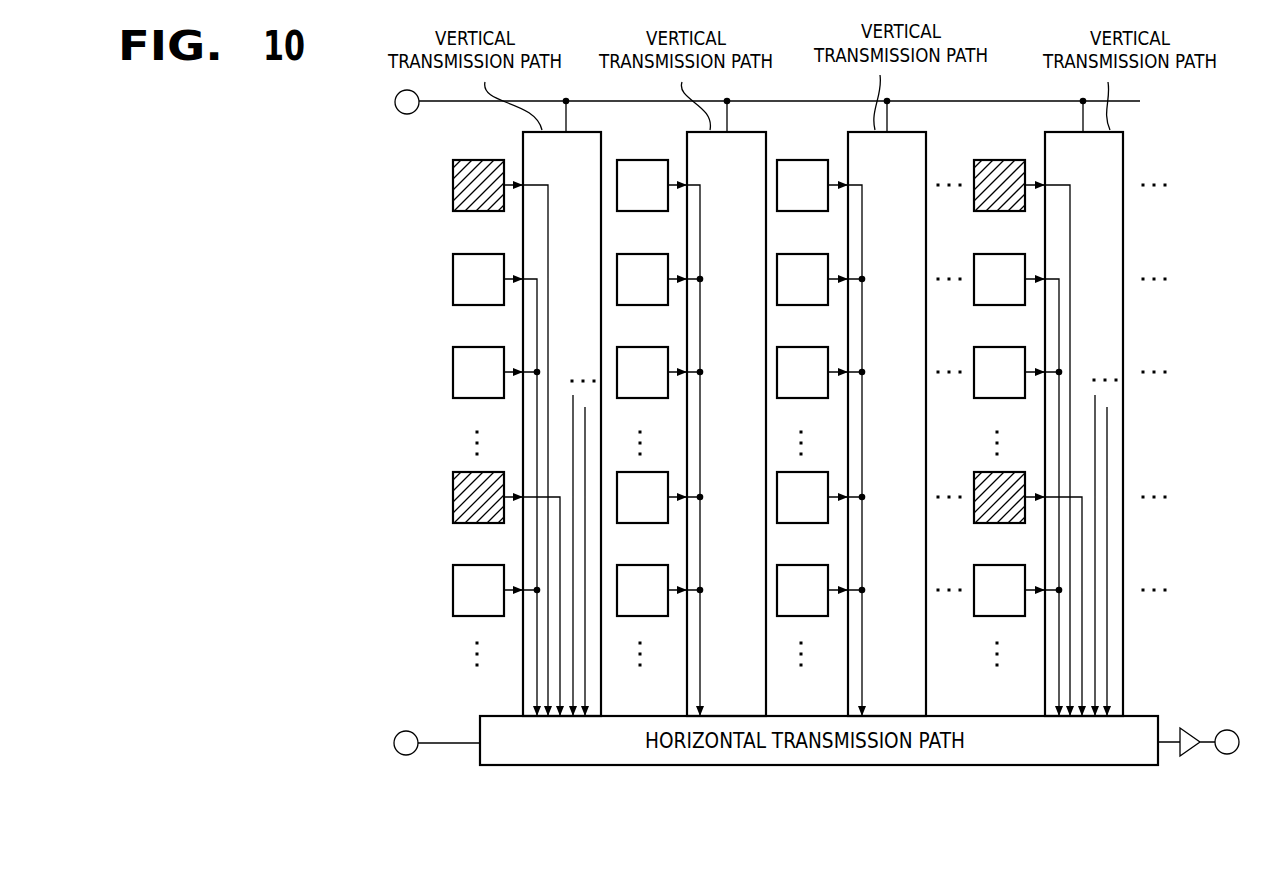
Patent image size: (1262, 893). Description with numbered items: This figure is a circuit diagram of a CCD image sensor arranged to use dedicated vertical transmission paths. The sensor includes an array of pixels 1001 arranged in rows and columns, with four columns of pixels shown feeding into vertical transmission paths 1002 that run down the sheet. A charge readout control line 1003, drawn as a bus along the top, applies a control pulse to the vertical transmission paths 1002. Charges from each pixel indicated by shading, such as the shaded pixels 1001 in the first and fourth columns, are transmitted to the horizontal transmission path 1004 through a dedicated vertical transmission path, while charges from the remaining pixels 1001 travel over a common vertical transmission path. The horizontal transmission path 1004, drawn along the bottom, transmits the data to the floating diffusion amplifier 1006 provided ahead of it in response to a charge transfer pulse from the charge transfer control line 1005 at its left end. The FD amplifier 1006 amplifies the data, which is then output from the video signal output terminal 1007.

The pixel 1001 is at (462, 211).
The vertical transmission path 1002 is at (523, 688).
The charge readout control line 1003 is at (407, 114).
The horizontal transmission path 1004 is at (578, 766).
The charge transfer control line 1005 is at (406, 755).
The floating diffusion amplifier 1006 is at (1186, 728).
The video signal output terminal 1007 is at (1227, 754).